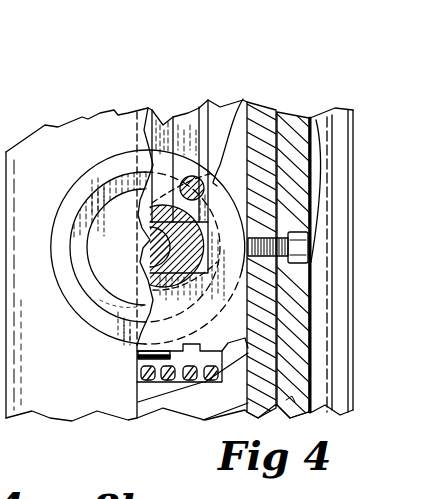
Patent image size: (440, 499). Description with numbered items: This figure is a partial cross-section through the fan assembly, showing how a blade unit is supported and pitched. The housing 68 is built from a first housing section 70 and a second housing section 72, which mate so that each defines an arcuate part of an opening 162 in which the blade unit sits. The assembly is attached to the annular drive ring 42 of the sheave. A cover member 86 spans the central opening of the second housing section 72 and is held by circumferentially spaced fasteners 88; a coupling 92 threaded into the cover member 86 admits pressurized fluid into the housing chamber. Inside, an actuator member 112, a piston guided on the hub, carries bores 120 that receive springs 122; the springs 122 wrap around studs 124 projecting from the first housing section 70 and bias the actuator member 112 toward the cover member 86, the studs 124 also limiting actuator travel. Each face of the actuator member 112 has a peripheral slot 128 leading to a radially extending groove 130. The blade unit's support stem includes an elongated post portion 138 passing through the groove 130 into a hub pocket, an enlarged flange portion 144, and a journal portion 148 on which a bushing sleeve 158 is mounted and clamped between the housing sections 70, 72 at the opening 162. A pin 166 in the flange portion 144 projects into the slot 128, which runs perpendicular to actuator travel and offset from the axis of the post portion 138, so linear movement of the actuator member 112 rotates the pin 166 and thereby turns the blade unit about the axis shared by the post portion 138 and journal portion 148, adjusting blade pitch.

The annular drive ring 42 is at (11, 82).
The housing 68 is at (57, 108).
The first housing section 70 is at (88, 119).
The second housing section 72 is at (274, 113).
The cover member 86 is at (289, 388).
The fasteners 88 is at (328, 118).
The coupling 92 is at (0, 466).
The actuator member 112 is at (236, 88).
The bores 120 is at (207, 398).
The springs 122 is at (185, 378).
The studs 124 is at (140, 353).
The peripheral slot 128 is at (183, 124).
The radially extending groove 130 is at (192, 273).
The elongated post portion 138 is at (90, 192).
The enlarged flange portion 144 is at (271, 112).
The journal portion 148 is at (127, 226).
The bushing sleeve 158 is at (91, 253).
The openings 162 is at (113, 288).
The pin 166 is at (191, 176).